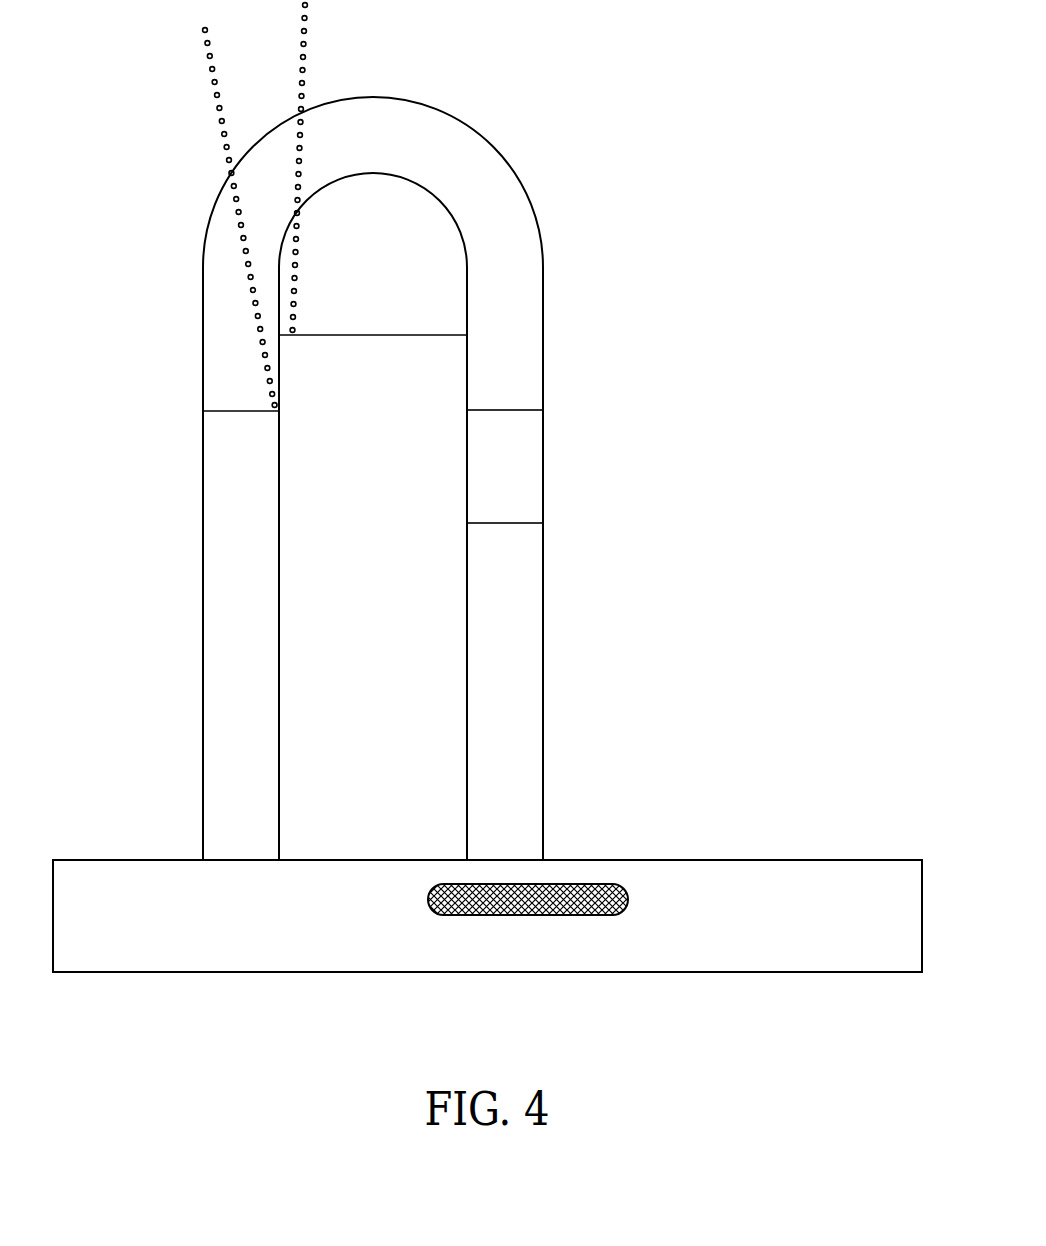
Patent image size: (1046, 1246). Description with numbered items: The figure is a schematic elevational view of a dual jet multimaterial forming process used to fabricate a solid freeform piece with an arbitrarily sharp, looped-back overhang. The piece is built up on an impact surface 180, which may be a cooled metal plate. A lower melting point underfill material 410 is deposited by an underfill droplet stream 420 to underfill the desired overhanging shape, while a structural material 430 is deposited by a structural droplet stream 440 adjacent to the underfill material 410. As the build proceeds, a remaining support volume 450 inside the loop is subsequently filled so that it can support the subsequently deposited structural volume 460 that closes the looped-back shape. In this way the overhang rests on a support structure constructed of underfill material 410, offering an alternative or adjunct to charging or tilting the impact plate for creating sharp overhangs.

The impact surface 180 is at (630, 898).
The underfill material 410 is at (495, 780).
The underfill droplet stream 420 is at (320, 63).
The structural material 430 is at (556, 478).
The structural droplet stream 440 is at (250, 368).
The remaining support volume 450 is at (382, 205).
The structural volume 460 is at (545, 213).